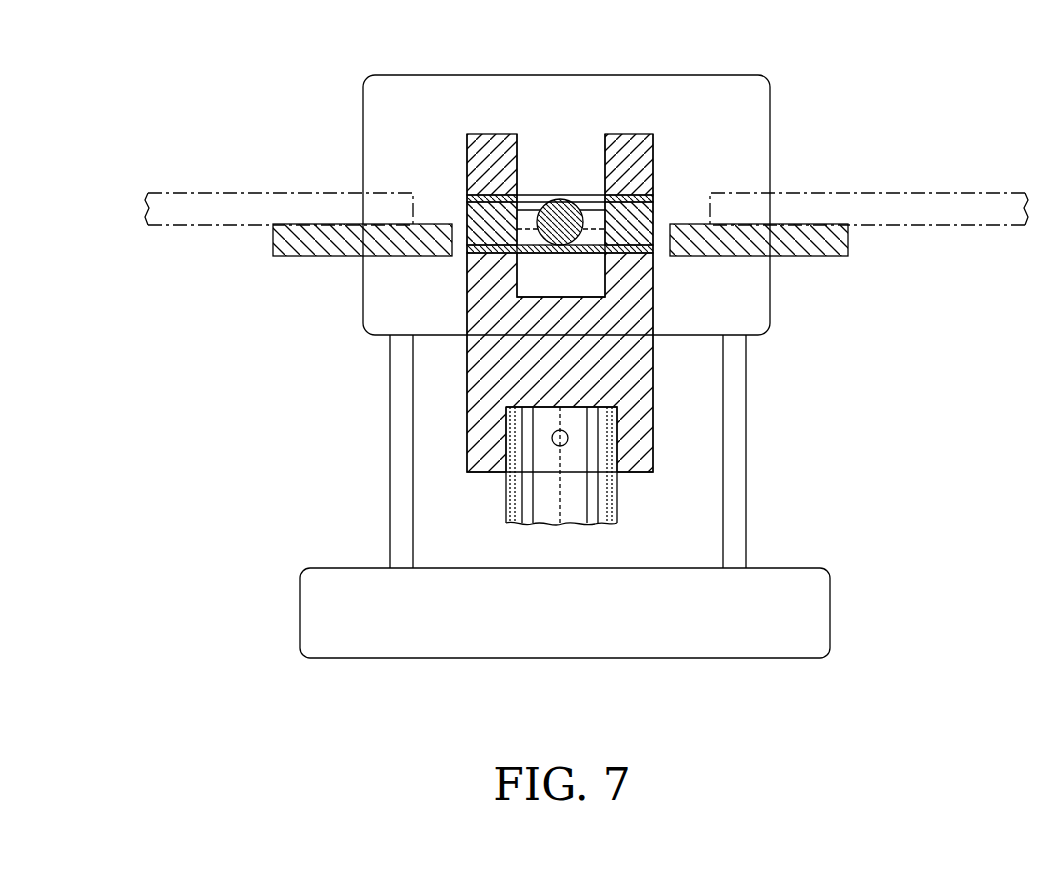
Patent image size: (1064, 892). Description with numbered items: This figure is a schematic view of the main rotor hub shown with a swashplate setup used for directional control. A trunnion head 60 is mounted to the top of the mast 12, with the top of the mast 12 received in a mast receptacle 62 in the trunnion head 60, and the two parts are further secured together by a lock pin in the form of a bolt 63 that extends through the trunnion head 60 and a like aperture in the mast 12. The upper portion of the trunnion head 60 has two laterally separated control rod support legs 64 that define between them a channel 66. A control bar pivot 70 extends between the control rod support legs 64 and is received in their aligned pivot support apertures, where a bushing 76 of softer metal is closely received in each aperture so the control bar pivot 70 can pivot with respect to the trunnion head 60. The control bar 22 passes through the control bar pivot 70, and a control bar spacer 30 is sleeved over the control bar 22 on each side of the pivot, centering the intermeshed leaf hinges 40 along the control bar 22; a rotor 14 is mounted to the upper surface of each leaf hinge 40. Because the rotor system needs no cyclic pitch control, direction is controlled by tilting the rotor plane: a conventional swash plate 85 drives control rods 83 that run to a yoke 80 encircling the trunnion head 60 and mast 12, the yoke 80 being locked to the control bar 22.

The mast 12 is at (506, 508).
The rotor 14 is at (202, 192).
The control bar 22 is at (537, 257).
The control bar spacer 30 is at (566, 200).
The leaf hinge 40 is at (340, 256).
The trunnion head 60 is at (467, 406).
The mast receptacle 62 is at (617, 483).
The bolt 63 is at (553, 443).
The control rod support leg 64 is at (467, 152).
The channel 66 is at (528, 145).
The control bar pivot 70 is at (533, 195).
The bushing 76 is at (653, 200).
The yoke 80 is at (770, 130).
The control rod 83 is at (746, 483).
The swash plate 85 is at (787, 568).